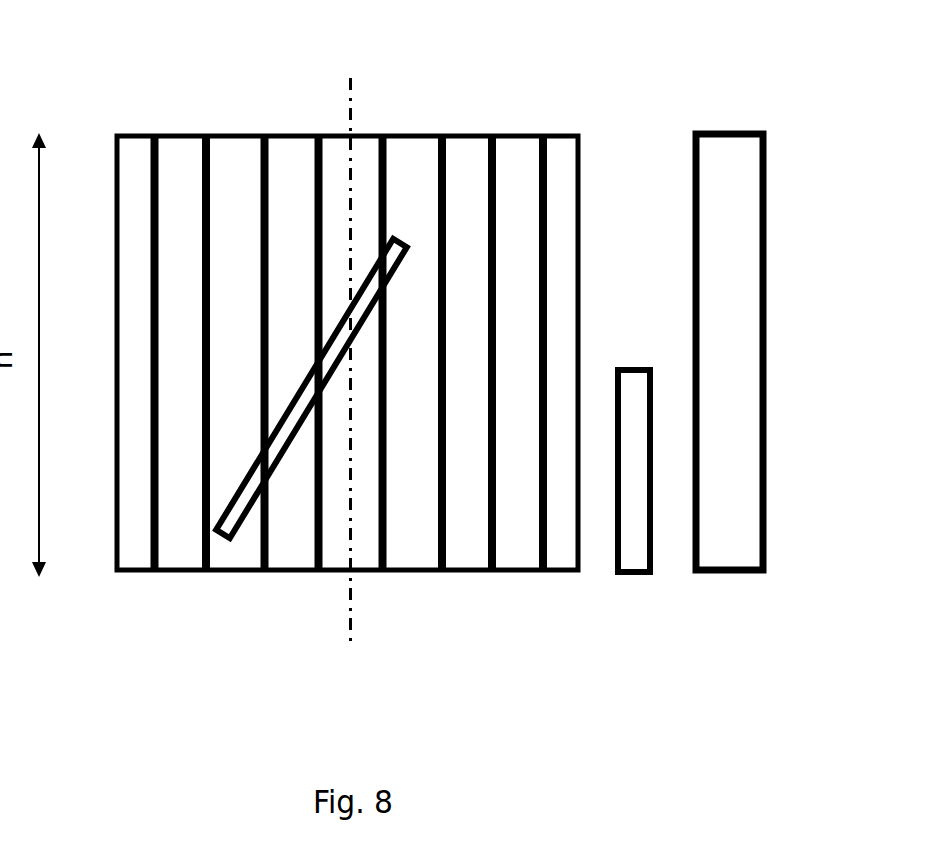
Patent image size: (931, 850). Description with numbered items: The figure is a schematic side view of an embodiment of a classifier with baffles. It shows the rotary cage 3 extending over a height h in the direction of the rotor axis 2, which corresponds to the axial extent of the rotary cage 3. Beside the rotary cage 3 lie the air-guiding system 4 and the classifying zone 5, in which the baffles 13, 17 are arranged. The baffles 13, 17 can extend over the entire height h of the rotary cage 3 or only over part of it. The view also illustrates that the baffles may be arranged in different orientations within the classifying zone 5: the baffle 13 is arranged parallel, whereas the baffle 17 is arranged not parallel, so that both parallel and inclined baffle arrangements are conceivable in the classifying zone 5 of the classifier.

The rotor axis 2 is at (350, 80).
The rotary cage 3 is at (512, 135).
The air-guiding system 4 is at (732, 130).
The classifying zone 5 is at (631, 259).
The baffle 13 is at (632, 562).
The baffle 17 is at (277, 440).